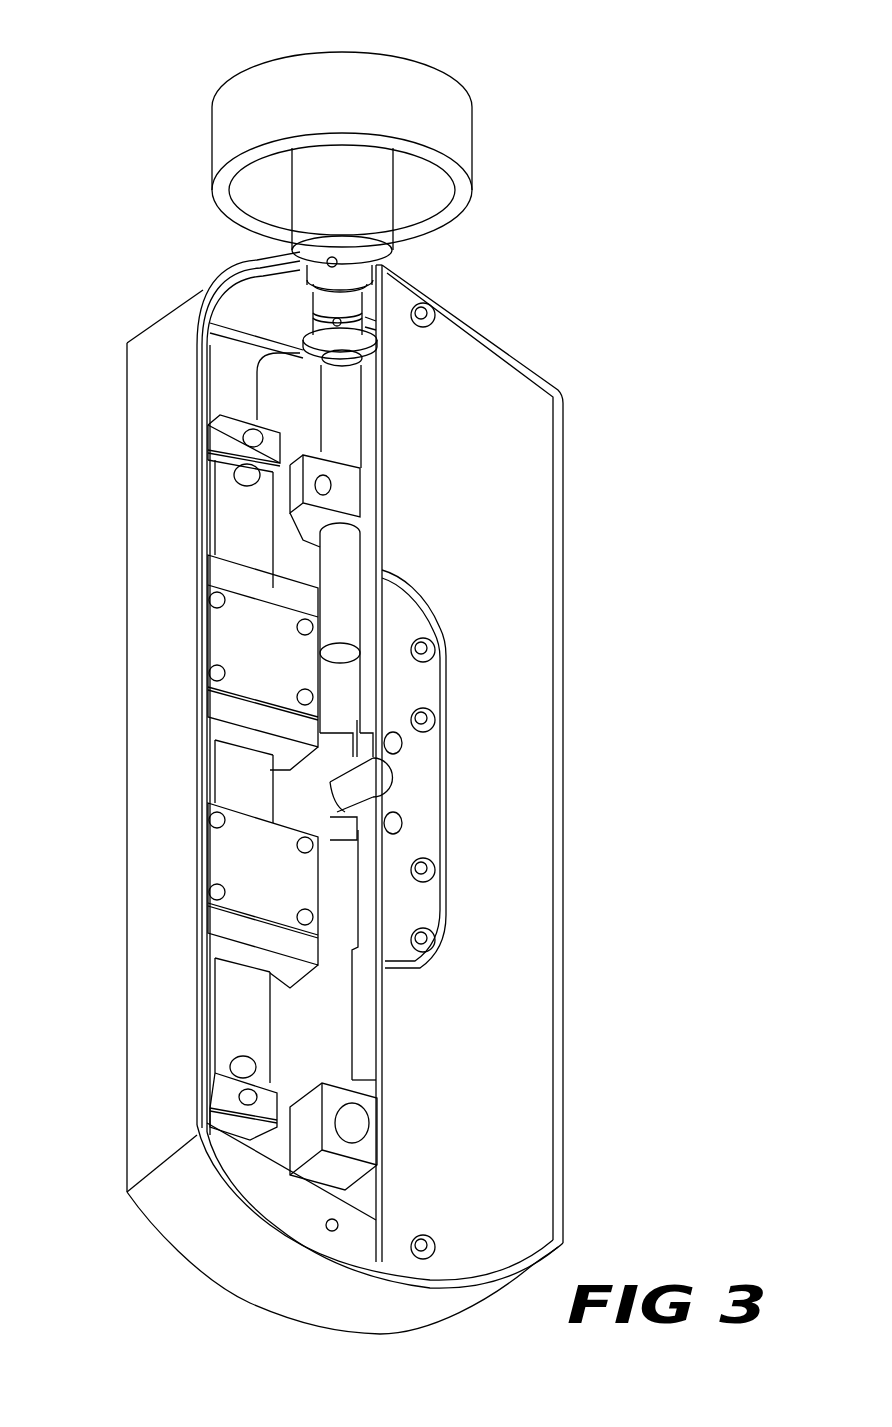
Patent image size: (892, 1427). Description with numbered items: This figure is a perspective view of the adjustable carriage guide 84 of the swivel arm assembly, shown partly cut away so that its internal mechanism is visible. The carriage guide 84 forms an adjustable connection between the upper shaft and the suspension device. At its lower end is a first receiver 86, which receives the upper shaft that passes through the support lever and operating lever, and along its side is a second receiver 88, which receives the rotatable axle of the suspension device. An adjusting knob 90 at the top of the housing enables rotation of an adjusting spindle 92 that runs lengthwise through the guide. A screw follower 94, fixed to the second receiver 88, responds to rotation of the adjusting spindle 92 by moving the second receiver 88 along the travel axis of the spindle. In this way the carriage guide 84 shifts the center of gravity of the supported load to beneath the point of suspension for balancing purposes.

The adjustable carriage guide 84 is at (187, 1195).
The first receiver 86 is at (348, 1167).
The second receiver 88 is at (405, 790).
The adjusting knob 90 is at (310, 90).
The adjusting spindle 92 is at (352, 423).
The screw follower 94 is at (347, 497).